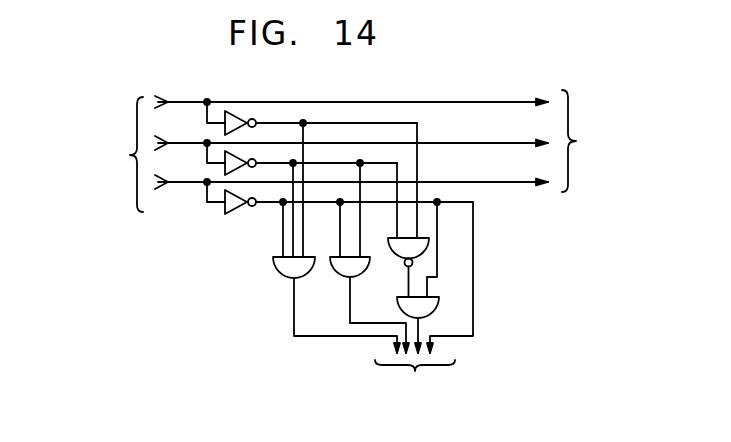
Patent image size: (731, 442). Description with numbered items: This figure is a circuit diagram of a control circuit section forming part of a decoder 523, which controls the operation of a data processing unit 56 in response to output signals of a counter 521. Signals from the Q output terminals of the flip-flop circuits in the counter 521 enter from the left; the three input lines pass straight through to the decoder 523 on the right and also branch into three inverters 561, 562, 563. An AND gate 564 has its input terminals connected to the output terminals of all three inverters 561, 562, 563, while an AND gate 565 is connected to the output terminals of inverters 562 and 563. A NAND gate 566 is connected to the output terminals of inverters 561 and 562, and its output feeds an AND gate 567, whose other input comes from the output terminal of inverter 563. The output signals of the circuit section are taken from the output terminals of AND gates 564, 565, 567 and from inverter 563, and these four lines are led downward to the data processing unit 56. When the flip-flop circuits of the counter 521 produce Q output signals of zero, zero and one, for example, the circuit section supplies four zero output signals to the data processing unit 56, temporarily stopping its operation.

The counter 521 is at (84, 154).
The decoder 523 is at (620, 141).
The data processing unit 56 is at (408, 383).
The inverter 561 is at (225, 132).
The inverter 562 is at (225, 172).
The inverter 563 is at (225, 210).
The AND gate 564 is at (281, 273).
The AND gate 565 is at (336, 272).
The NAND gate 566 is at (394, 257).
The AND gate 567 is at (428, 304).